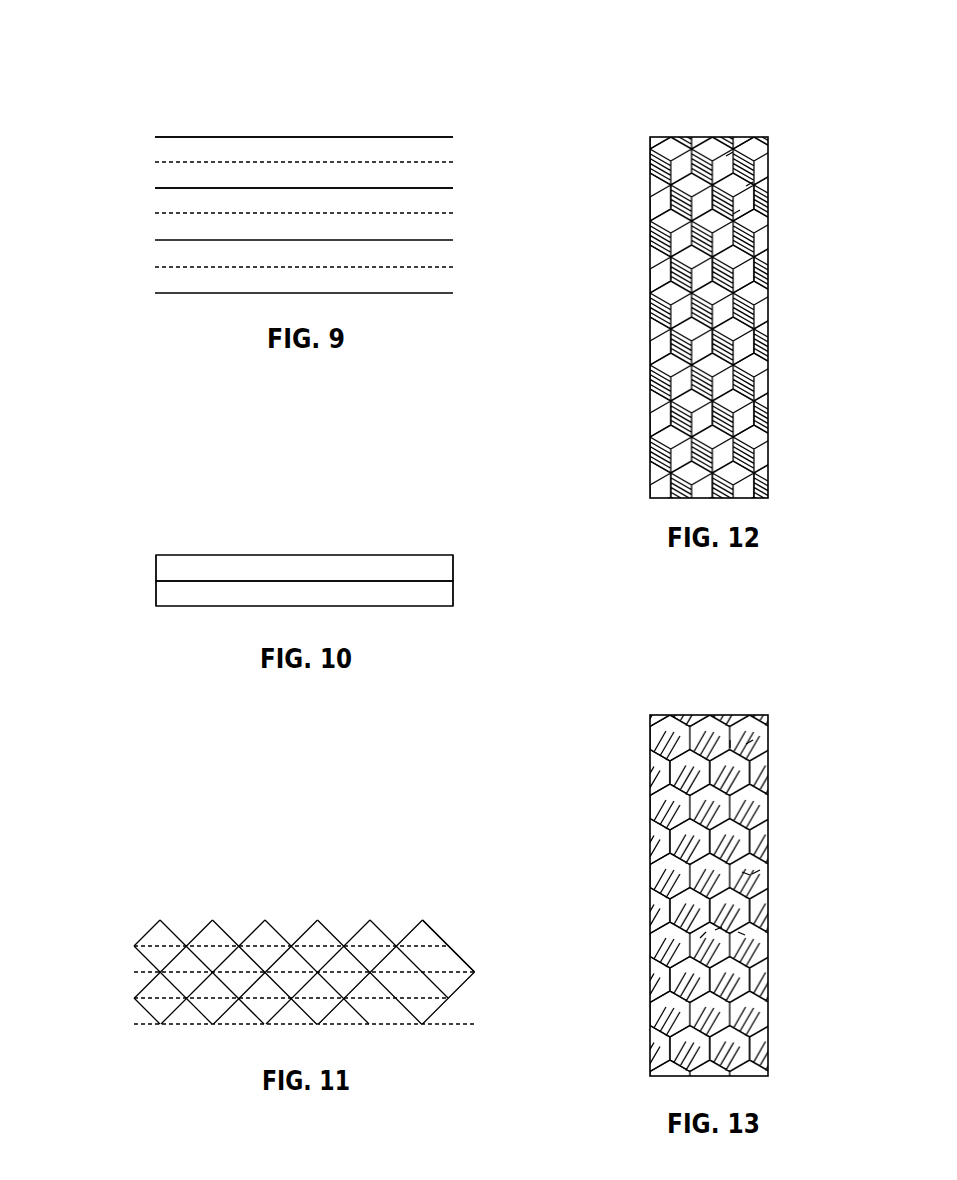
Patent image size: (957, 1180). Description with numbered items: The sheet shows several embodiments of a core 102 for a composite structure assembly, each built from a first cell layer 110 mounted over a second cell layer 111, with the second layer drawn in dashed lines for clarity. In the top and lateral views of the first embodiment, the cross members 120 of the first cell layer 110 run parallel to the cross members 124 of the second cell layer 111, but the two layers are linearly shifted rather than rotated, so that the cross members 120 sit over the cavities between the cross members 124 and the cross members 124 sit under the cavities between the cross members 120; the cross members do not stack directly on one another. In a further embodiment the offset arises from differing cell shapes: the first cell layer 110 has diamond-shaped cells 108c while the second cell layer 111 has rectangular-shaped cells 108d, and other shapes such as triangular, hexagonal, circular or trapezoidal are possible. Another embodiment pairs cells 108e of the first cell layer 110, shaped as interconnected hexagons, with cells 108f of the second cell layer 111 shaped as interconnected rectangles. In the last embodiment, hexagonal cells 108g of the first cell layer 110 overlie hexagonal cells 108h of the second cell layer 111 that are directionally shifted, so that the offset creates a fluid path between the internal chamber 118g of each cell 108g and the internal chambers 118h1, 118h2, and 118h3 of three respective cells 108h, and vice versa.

In FIG. 9, the core 102 is at (164, 71).
In FIG. 10, the core 102 is at (164, 511).
In FIG. 12, the core 102 is at (646, 117).
In FIG. 13, the core 102 is at (646, 696).
In FIG. 9, the first cell layer 110 is at (235, 134).
In FIG. 10, the first cell layer 110 is at (152, 567).
In FIG. 11, the first cell layer 110 is at (423, 919).
In FIG. 12, the first cell layer 110 is at (727, 157).
In FIG. 13, the first cell layer 110 is at (757, 732).
In FIG. 9, the second cell layer 111 is at (151, 176).
In FIG. 10, the second cell layer 111 is at (463, 595).
In FIG. 11, the second cell layer 111 is at (139, 961).
In FIG. 12, the second cell layer 111 is at (753, 182).
In FIG. 13, the second cell layer 111 is at (760, 870).
In FIG. 9, the cross members 120 is at (197, 136).
In FIG. 10, the cross members 120 is at (420, 554).
In FIG. 9, the cross members 124 is at (360, 161).
In FIG. 10, the cross members 124 is at (185, 598).
In FIG. 11, the diamond-shaped cells 108c is at (165, 931).
In FIG. 11, the rectangular-shaped cells 108d is at (137, 985).
In FIG. 12, the cells 108e is at (733, 152).
In FIG. 12, the cells 108f is at (740, 210).
In FIG. 13, the cells 108g is at (730, 740).
In FIG. 13, the cells 108h is at (700, 938).
In FIG. 13, the internal chamber 118g is at (753, 740).
In FIG. 13, the internal chamber 118h1 is at (750, 875).
In FIG. 13, the internal chamber 118h2 is at (722, 927).
In FIG. 13, the internal chamber 118h3 is at (745, 935).